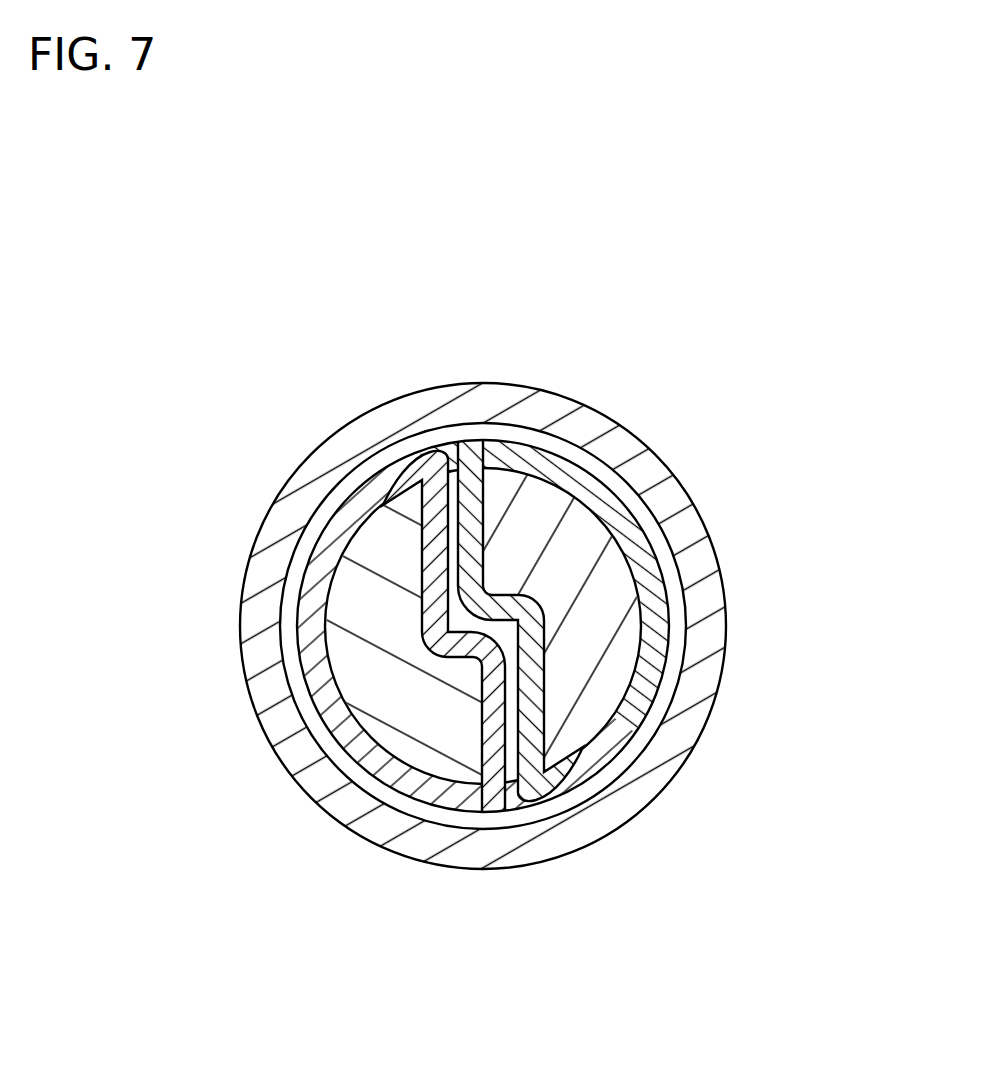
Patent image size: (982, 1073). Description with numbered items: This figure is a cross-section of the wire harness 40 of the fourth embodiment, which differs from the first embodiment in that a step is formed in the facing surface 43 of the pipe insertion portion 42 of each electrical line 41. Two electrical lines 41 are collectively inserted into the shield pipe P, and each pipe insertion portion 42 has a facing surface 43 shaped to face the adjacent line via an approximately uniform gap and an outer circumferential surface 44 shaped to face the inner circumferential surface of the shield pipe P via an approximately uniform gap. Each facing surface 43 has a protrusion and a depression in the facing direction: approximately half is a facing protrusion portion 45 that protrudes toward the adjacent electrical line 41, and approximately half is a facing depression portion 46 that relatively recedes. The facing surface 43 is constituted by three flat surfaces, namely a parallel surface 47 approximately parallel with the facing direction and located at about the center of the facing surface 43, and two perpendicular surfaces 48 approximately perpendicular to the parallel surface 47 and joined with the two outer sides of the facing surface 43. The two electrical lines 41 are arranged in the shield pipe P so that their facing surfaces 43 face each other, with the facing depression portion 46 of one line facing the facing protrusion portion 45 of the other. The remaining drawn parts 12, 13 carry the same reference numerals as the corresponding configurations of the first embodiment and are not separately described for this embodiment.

The shield pipe P is at (648, 468).
The inner pipe 12 is at (590, 718).
The outer pipe 13 is at (647, 693).
The wire harness 40 is at (495, 534).
The electrical line 41 is at (388, 524).
The pipe insertion portion 42 is at (527, 506).
The facing surface 43 is at (352, 626).
The outer circumferential surface 44 is at (643, 613).
The facing protrusion portion 45 is at (458, 544).
The facing depression portion 46 is at (517, 713).
The parallel surface 47 is at (448, 570).
The perpendicular surface 48 is at (490, 598).